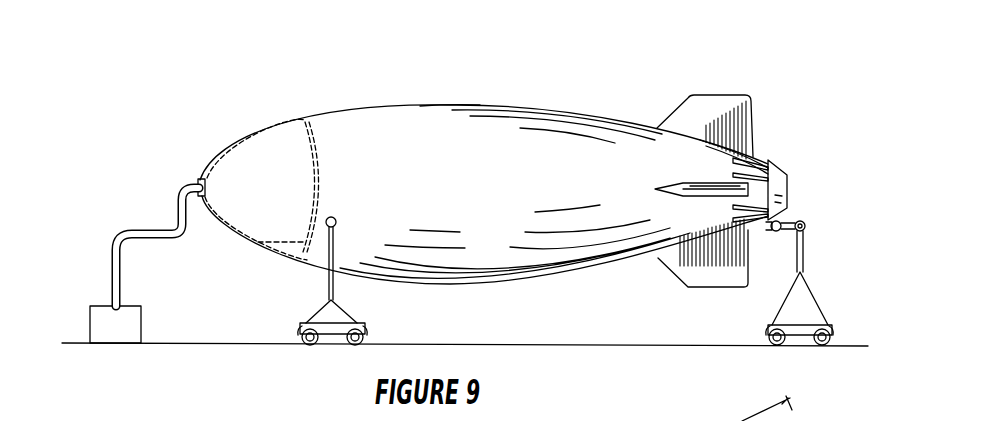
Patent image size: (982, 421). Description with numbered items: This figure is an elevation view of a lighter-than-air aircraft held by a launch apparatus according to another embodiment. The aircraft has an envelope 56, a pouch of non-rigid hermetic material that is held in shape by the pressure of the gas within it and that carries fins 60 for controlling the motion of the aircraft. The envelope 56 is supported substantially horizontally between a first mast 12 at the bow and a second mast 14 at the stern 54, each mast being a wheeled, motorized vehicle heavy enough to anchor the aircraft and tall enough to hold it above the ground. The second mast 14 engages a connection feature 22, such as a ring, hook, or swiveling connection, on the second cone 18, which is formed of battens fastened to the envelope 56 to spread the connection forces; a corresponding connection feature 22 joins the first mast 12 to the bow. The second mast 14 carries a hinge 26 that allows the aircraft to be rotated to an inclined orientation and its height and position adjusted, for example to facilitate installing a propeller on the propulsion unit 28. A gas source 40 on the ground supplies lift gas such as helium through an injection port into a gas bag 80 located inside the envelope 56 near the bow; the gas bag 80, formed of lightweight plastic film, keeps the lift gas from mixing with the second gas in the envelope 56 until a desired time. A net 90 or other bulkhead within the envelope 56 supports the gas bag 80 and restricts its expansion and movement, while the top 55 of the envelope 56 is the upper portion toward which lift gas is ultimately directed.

The first mast 12 is at (306, 322).
The second mast 14 is at (820, 300).
The second cone 18 is at (758, 160).
The connection feature 22 is at (337, 220).
The hinge 26 is at (800, 218).
The propulsion unit 28 is at (790, 177).
The gas source 40 is at (102, 305).
The stern 54 is at (728, 145).
The top of the envelope 55 is at (503, 107).
The envelope 56 is at (449, 105).
The fins 60 is at (706, 95).
The gas bag 80 is at (247, 140).
The net 90 is at (300, 275).